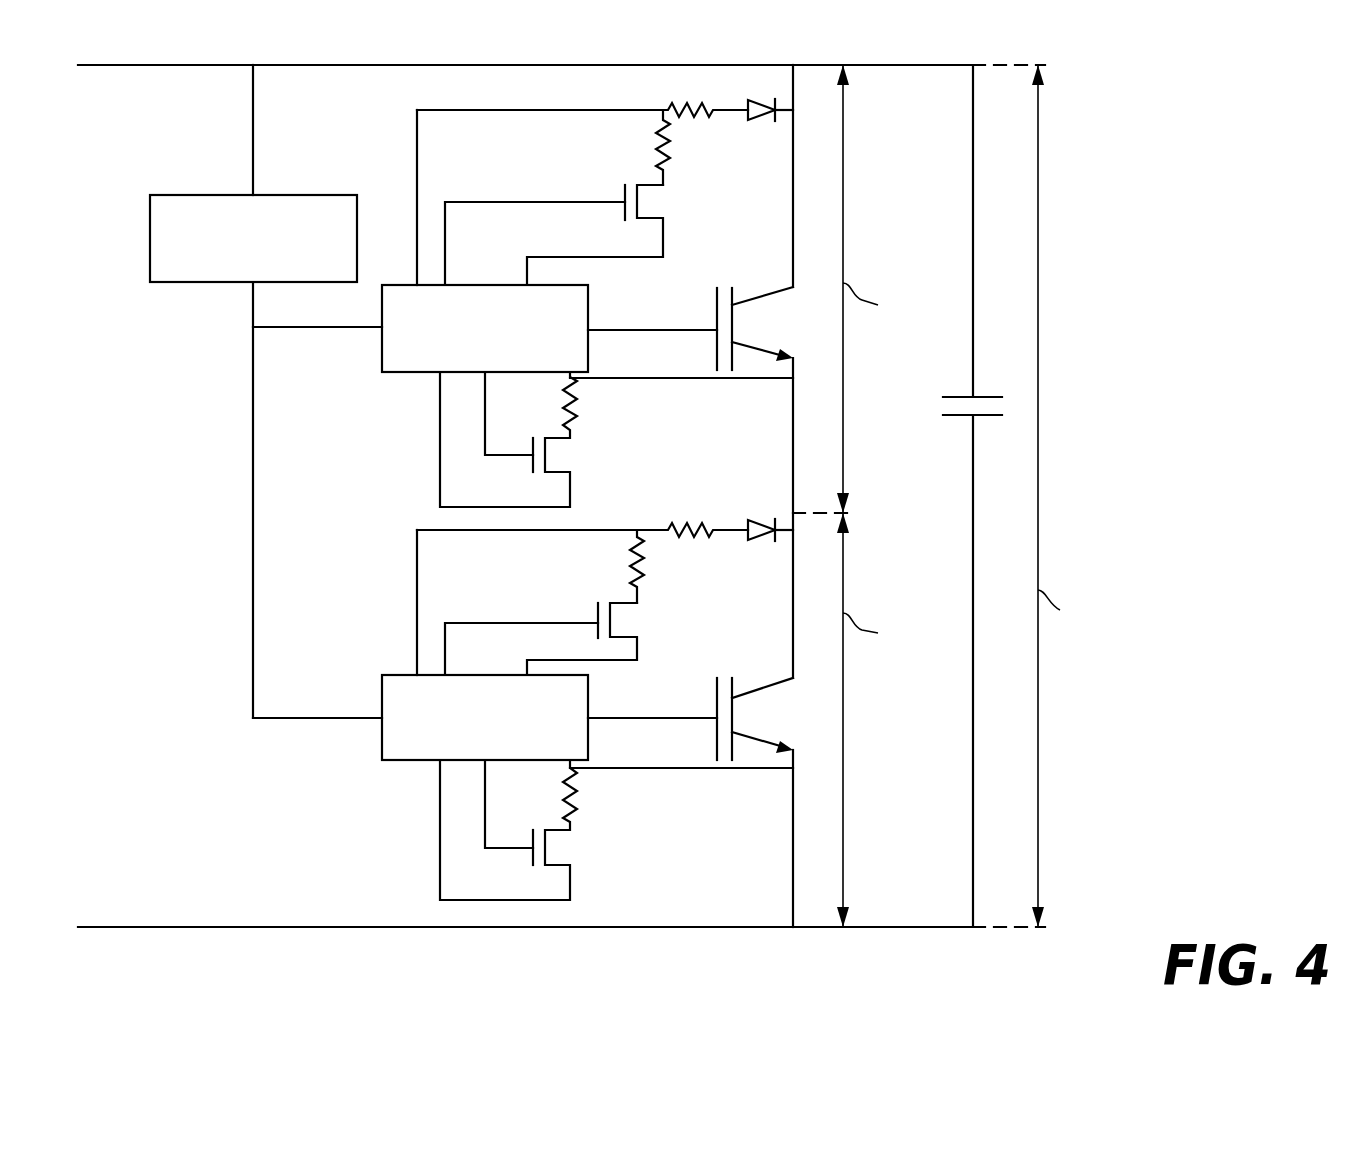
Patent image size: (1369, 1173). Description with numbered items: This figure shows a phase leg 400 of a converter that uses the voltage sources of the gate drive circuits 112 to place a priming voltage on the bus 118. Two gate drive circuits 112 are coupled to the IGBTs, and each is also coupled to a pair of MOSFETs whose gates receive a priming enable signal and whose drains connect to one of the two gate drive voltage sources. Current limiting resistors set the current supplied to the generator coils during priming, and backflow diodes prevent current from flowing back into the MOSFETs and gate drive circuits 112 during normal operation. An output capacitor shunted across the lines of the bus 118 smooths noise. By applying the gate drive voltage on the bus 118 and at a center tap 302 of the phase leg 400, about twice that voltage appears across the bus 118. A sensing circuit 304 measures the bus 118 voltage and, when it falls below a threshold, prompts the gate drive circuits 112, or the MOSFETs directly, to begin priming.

The phase leg 400 is at (1093, 108).
The bus 118 is at (165, 68).
The sensing circuit 304 is at (150, 214).
The gate drive circuit 112 is at (382, 347).
The center tap 302 is at (793, 598).